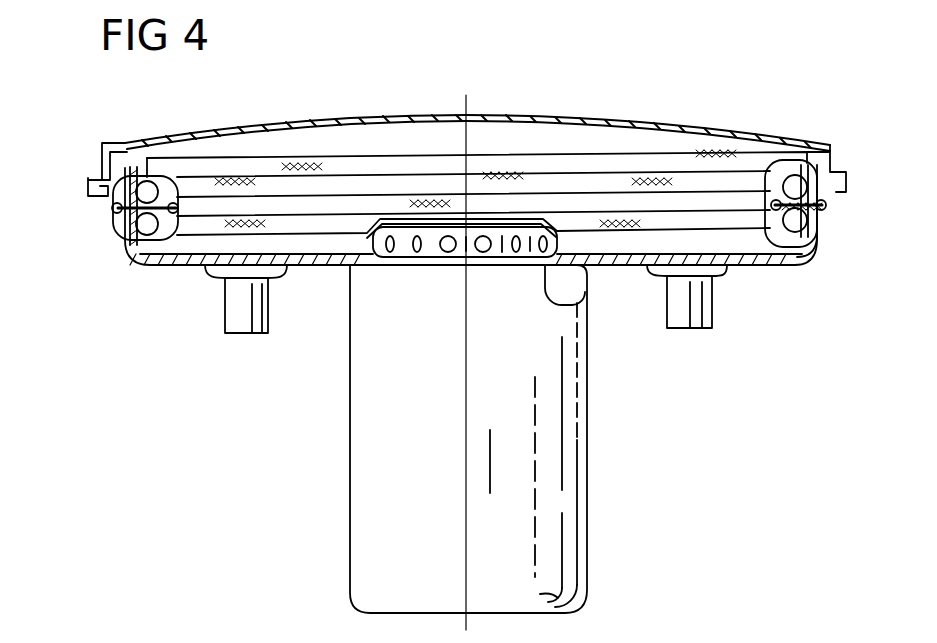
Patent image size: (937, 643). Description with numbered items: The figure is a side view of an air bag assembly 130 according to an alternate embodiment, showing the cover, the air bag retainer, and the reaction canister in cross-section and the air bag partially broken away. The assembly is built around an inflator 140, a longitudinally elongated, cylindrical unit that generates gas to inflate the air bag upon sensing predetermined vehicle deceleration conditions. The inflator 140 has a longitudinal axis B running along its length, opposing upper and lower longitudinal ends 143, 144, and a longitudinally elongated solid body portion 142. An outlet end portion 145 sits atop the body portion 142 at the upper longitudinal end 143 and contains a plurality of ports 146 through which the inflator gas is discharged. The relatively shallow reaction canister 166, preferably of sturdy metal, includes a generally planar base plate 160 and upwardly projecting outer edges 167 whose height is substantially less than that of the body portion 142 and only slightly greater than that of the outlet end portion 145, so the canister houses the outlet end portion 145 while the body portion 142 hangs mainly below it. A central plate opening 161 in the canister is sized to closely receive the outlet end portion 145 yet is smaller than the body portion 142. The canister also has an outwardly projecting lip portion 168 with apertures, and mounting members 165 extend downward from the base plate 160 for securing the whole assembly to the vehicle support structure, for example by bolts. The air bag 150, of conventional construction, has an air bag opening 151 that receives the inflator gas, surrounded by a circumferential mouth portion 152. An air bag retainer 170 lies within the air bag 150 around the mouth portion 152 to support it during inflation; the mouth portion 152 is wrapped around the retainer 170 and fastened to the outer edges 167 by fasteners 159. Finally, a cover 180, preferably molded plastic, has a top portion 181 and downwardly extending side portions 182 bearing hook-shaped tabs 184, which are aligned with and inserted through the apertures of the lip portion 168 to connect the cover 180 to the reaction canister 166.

The air bag assembly 130 is at (714, 108).
The inflator 140 is at (592, 455).
The body portion 142 is at (590, 485).
The upper longitudinal end 143 is at (372, 272).
The lower longitudinal end 144 is at (582, 592).
The outlet end portion 145 is at (388, 237).
The ports 146 is at (448, 257).
The air bag 150 is at (620, 150).
The air bag opening 151 is at (150, 180).
The mouth portion 152 is at (135, 263).
The fasteners 159 is at (823, 213).
The base plate 160 is at (155, 265).
The central plate opening 161 is at (574, 303).
The mounting members 165 is at (697, 318).
The reaction canister 166 is at (806, 258).
The outer edges 167 is at (123, 238).
The lip portion 168 is at (90, 192).
The air bag retainer 170 is at (822, 235).
The cover 180 is at (562, 112).
The top portion 181 is at (260, 128).
The side portions 182 is at (833, 148).
The tabs 184 is at (826, 205).
The longitudinal axis B is at (468, 95).